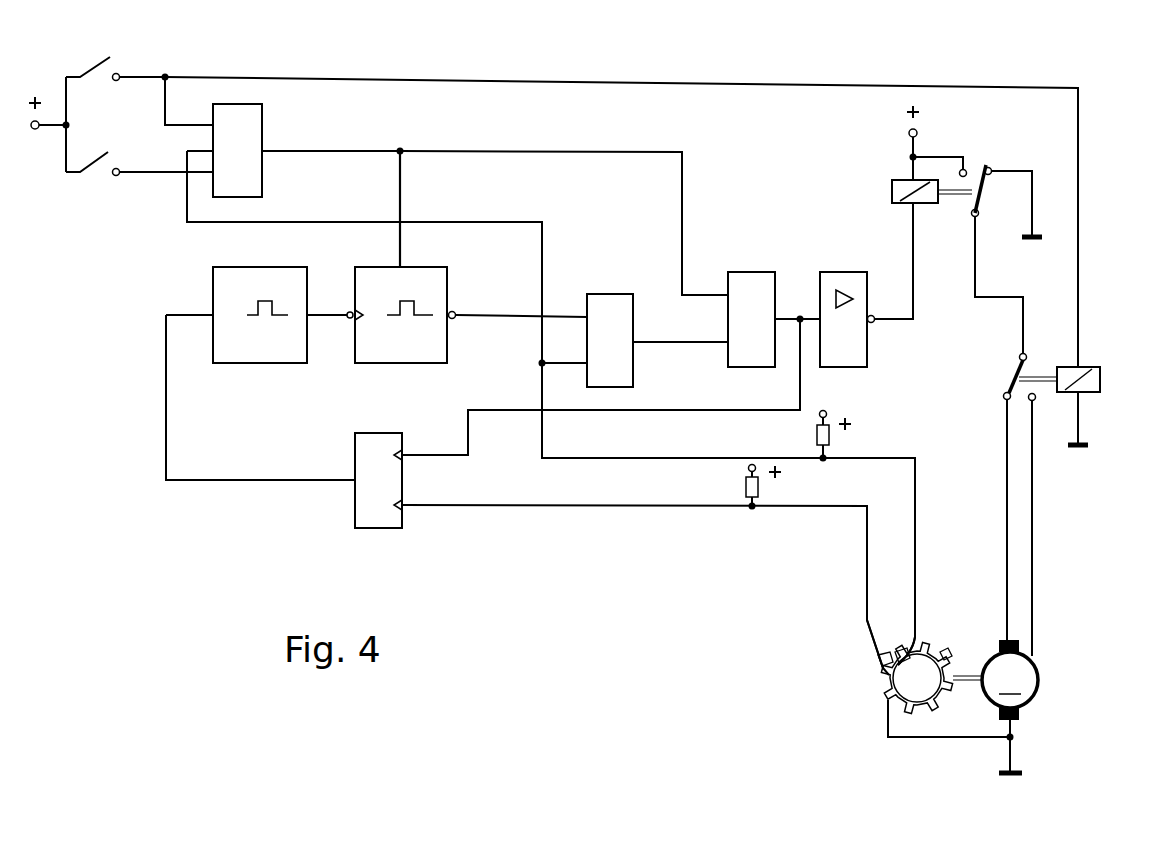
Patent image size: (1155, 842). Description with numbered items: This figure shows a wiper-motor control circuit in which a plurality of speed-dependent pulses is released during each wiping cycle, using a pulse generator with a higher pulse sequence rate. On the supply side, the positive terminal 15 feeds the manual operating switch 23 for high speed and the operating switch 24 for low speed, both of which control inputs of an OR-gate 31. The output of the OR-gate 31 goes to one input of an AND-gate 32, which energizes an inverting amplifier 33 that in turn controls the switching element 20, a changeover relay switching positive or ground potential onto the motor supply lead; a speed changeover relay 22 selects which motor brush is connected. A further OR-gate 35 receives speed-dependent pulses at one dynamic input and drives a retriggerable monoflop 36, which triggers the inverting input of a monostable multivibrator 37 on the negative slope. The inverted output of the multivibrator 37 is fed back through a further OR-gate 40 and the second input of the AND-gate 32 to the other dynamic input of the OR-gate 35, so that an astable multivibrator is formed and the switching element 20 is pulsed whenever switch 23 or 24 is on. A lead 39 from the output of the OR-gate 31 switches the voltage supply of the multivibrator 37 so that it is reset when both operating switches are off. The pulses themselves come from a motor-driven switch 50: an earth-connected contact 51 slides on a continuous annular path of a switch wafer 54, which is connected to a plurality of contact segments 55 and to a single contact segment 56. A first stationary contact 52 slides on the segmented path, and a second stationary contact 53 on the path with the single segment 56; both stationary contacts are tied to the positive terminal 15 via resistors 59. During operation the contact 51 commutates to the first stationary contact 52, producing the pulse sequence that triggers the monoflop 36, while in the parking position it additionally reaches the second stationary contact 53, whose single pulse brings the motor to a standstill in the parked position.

The positive terminal 15 is at (35, 129).
The manual operating switch for high speed 23 is at (85, 72).
The operating switch for low speed 24 is at (97, 154).
The OR-gate 31 is at (262, 127).
The lead 39 is at (402, 200).
The monoflop 36 is at (263, 355).
The monostable multivibrator 37 is at (443, 292).
The OR-gate 40 is at (633, 366).
The AND-gate 32 is at (758, 275).
The inverting amplifier 33 is at (852, 275).
The switching element 20 is at (928, 200).
The speed changeover relay 22 is at (1093, 366).
The OR-gate 35 is at (387, 528).
The resistors 59 is at (830, 440).
The switch 50 is at (850, 637).
The first stationary contact 52 is at (868, 652).
The single contact segment 56 is at (903, 666).
The second stationary contact 53 is at (912, 642).
The contact segments 55 is at (948, 650).
The switch wafer 54 is at (910, 695).
The contact 51 is at (925, 738).